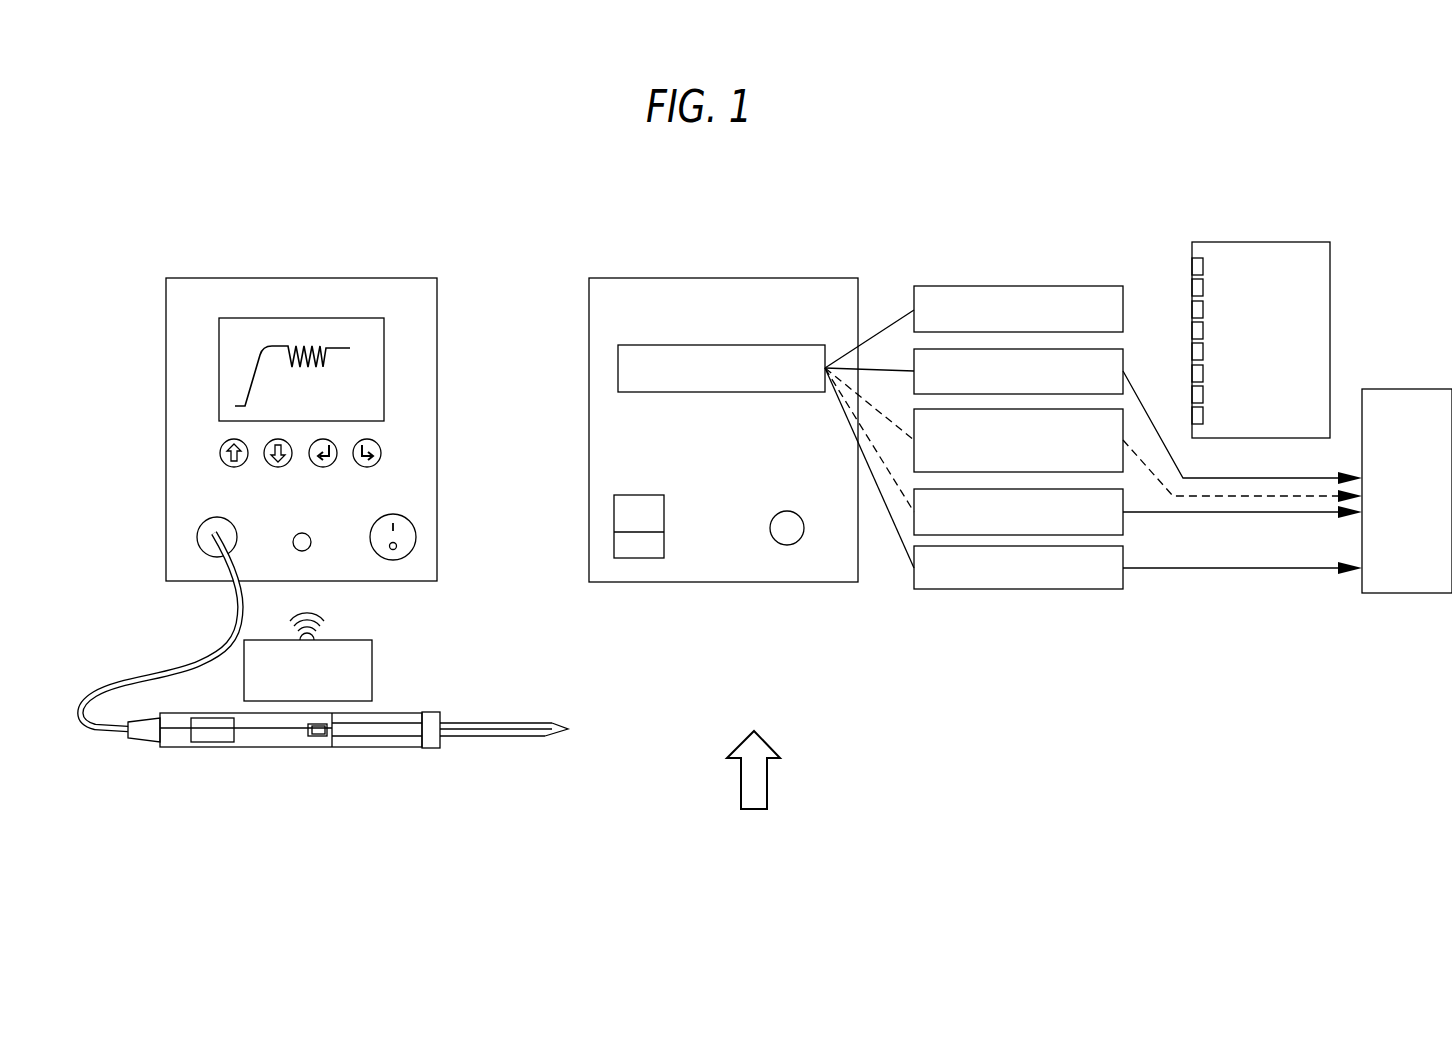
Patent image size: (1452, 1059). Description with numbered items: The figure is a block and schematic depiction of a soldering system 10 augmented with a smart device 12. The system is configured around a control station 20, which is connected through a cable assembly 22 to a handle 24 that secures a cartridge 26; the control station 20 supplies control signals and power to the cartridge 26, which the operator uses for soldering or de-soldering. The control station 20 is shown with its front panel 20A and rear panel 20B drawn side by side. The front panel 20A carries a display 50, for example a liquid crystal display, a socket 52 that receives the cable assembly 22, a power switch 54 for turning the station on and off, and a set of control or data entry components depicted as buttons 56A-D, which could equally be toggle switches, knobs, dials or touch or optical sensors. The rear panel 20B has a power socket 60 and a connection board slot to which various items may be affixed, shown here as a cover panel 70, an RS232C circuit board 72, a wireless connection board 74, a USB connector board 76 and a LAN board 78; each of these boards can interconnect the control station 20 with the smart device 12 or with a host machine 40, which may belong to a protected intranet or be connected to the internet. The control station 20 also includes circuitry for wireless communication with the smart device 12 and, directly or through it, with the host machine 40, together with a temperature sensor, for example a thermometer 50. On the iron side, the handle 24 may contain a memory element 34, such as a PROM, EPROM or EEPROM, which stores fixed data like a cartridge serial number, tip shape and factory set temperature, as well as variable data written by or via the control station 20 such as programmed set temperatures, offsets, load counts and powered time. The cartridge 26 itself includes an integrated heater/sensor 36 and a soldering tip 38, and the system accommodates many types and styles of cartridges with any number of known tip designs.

The soldering system 10 is at (752, 786).
The smart device 12 is at (1261, 340).
The control station 20 is at (302, 278).
The front panel 20A is at (195, 477).
The rear panel 20B is at (723, 278).
The cable assembly 22 is at (175, 658).
The handle 24 is at (290, 748).
The cartridge 26 is at (463, 738).
The memory element 34 is at (212, 748).
The integrated heater/sensor 36 is at (503, 738).
The soldering tip 38 is at (553, 719).
The host machine 40 is at (1407, 491).
The display 50 is at (219, 346).
The socket 52 is at (198, 536).
The power switch 54 is at (417, 538).
The buttons 56A-D is at (220, 453).
The power socket 60 is at (614, 514).
The cover panel 70 is at (1018, 309).
The RS232C circuit board 72 is at (1126, 413).
The wireless connection board 74 is at (1126, 452).
The USB connector board 76 is at (1126, 512).
The LAN board 78 is at (1126, 574).